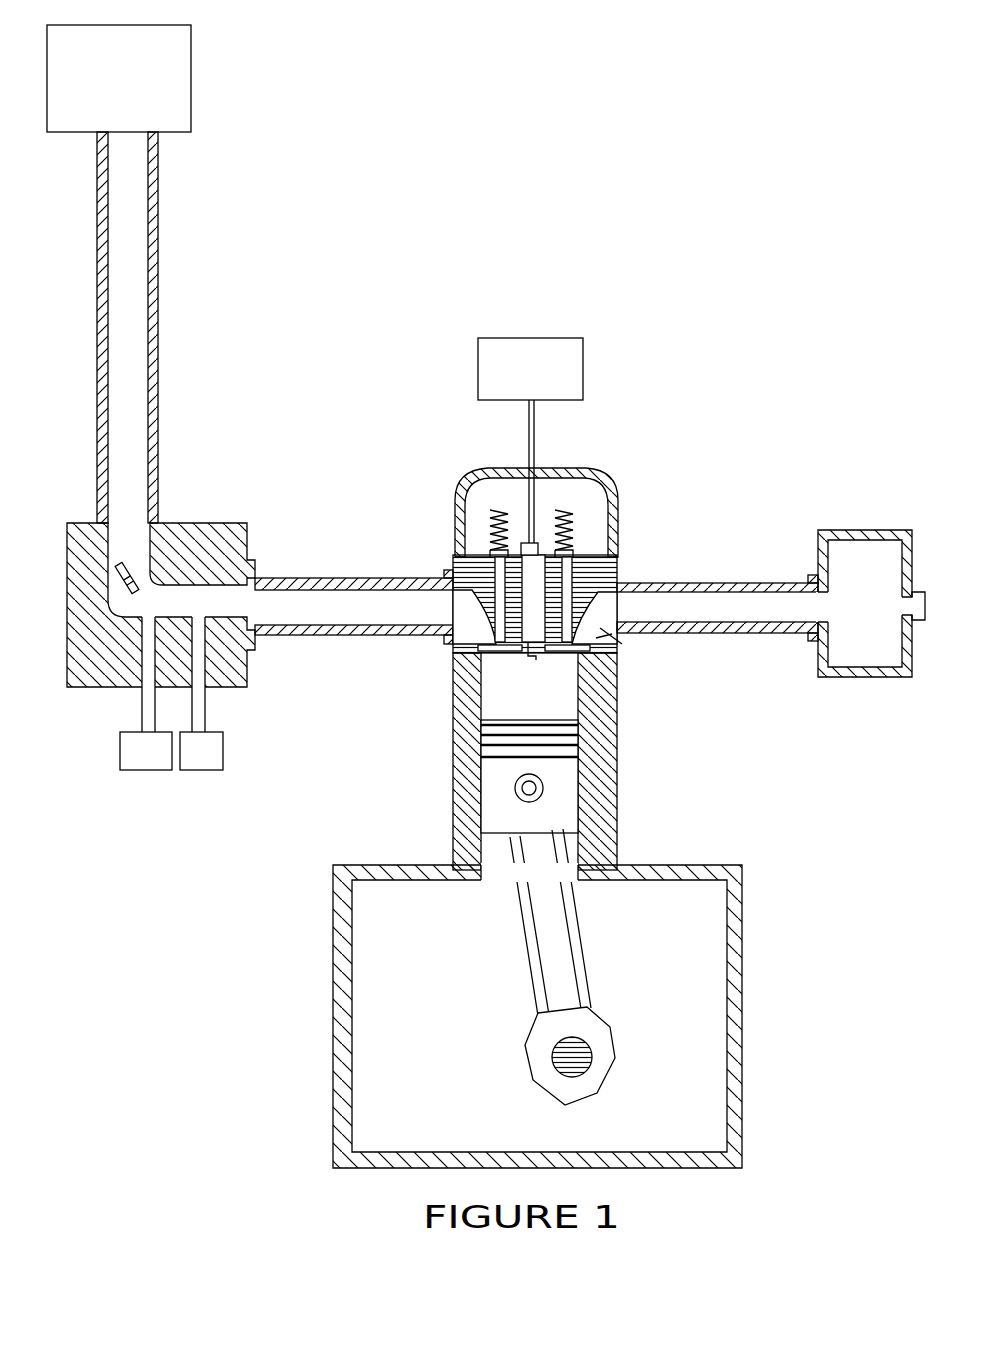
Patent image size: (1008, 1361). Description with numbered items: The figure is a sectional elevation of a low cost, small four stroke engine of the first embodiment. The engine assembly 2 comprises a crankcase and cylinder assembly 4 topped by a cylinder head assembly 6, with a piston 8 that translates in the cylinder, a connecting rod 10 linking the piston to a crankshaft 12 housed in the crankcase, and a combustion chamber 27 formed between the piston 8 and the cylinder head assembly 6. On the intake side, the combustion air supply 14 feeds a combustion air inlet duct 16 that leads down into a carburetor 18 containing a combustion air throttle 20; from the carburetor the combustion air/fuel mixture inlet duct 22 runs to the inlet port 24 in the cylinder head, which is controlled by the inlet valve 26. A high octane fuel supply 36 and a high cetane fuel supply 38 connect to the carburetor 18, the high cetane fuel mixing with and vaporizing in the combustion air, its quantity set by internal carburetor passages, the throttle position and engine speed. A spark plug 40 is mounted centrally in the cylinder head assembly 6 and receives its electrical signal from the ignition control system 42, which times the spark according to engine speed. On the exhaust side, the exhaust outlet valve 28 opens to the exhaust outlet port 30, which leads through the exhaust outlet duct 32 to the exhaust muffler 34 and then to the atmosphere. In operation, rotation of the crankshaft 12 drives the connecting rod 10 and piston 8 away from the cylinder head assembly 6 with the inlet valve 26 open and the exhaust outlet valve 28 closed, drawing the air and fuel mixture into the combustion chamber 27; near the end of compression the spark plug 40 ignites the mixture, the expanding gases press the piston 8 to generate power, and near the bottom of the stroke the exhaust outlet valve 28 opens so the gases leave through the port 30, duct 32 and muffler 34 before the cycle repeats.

The engine assembly 2 is at (183, 1143).
The crankcase and cylinder assembly 4 is at (334, 958).
The cylinder head assembly 6 is at (617, 566).
The piston 8 is at (570, 795).
The connecting rod 10 is at (590, 935).
The crankshaft 12 is at (588, 1050).
The combustion air supply 14 is at (191, 52).
The combustion air inlet duct 16 is at (158, 265).
The carburetor 18 is at (220, 523).
The combustion air throttle 20 is at (133, 572).
The combustion air/fuel mixture inlet duct 22 is at (338, 636).
The inlet port 24 is at (453, 645).
The inlet valve 26 is at (500, 652).
The combustion chamber 27 is at (453, 718).
The exhaust outlet valve 28 is at (566, 652).
The exhaust outlet port 30 is at (612, 640).
The exhaust outlet duct 32 is at (740, 633).
The exhaust muffler 34 is at (865, 530).
The high octane fuel supply 36 is at (223, 765).
The high cetane fuel supply 38 is at (125, 770).
The spark plug 40 is at (530, 662).
The ignition control system (ICS) 42 is at (583, 368).